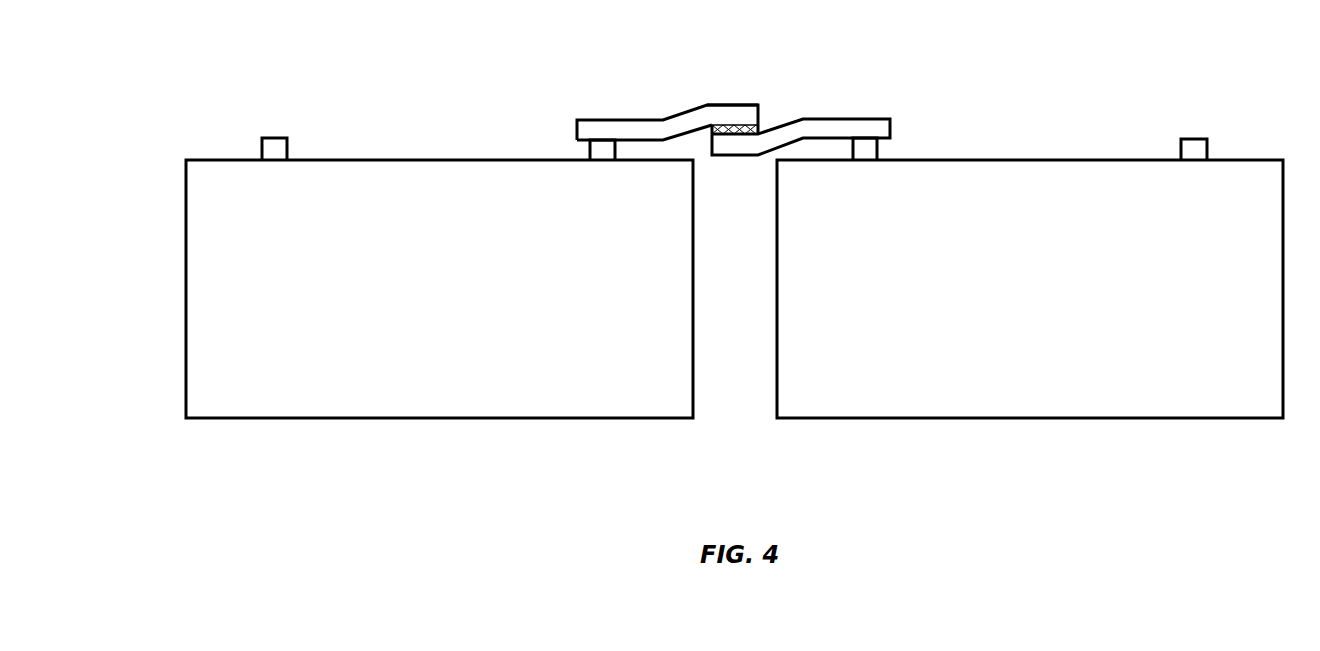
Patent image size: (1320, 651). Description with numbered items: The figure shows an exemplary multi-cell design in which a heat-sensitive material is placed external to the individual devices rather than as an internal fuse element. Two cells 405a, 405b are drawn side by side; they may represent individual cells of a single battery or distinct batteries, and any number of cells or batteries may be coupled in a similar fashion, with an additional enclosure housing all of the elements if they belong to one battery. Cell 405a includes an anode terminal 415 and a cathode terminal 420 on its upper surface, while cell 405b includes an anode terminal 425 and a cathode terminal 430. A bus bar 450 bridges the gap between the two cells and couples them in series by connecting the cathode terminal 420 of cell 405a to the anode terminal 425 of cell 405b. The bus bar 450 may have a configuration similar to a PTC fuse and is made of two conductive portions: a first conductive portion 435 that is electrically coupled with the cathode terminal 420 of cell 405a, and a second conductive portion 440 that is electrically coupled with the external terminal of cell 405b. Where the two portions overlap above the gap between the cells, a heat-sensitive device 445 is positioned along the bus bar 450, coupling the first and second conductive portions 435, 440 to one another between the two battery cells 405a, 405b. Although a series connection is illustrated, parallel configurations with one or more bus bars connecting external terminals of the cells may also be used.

The cell 405a is at (435, 418).
The cell 405b is at (1025, 418).
The anode terminal 415 is at (288, 146).
The cathode terminal 420 is at (590, 155).
The anode terminal 425 is at (878, 150).
The cathode terminal 430 is at (1181, 148).
The first conductive portion 435 is at (620, 120).
The second conductive portion 440 is at (855, 119).
The heat-sensitive device 445 is at (705, 128).
The bus bar 450 is at (730, 105).